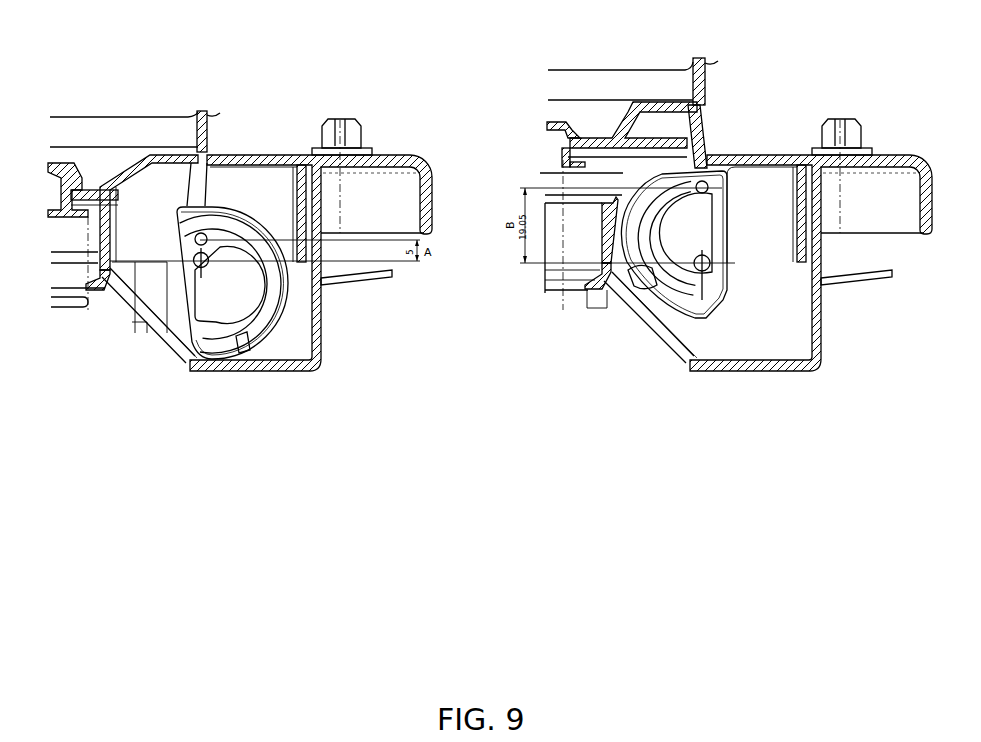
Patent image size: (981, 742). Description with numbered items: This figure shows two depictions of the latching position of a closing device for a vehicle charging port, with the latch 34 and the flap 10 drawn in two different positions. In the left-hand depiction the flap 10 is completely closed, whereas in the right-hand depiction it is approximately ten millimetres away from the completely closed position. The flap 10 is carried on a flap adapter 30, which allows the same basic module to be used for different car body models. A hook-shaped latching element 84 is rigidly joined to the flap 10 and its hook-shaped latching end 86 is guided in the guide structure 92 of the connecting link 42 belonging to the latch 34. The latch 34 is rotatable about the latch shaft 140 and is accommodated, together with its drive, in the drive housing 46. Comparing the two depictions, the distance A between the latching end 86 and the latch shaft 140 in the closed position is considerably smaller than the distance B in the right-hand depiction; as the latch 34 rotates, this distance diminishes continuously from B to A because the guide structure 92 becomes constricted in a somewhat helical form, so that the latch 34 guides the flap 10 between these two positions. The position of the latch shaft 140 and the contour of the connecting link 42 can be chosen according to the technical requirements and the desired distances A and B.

The flap 10 is at (203, 104).
The flap adapter 30 is at (208, 115).
The latching element 84 is at (200, 178).
The latching end 86 is at (203, 234).
The latch shaft 140 is at (200, 262).
The guide structure 92 is at (268, 270).
The latch 34 is at (197, 334).
The connecting link 42 is at (242, 334).
The drive housing 46 is at (313, 368).